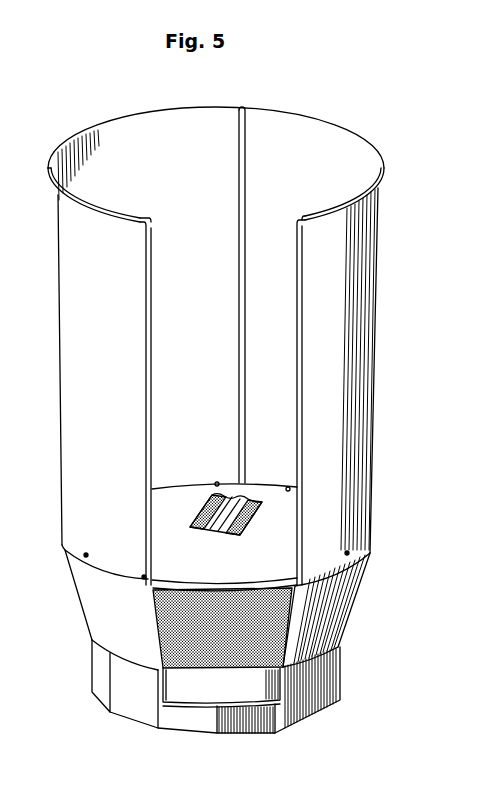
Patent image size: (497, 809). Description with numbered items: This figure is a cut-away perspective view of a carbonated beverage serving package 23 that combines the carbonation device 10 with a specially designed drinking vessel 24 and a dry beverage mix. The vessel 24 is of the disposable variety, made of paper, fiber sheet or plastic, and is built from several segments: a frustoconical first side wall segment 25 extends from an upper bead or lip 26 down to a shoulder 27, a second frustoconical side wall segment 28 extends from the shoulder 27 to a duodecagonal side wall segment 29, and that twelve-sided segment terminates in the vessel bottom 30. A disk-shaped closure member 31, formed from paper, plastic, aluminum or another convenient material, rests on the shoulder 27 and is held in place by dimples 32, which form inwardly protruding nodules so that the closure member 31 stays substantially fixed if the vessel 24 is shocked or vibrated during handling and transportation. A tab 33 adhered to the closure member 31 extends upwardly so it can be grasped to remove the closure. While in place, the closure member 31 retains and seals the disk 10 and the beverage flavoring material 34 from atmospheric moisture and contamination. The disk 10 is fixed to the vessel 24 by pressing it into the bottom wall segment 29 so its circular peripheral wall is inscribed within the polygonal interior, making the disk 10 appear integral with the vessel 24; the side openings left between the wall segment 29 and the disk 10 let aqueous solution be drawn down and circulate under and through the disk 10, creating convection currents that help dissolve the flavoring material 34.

The carbonation device 10 is at (192, 693).
The carbonated beverage serving package 23 is at (383, 325).
The drinking vessel 24 is at (341, 293).
The first side wall segment 25 is at (350, 377).
The upper bead 26 is at (52, 163).
The shoulder 27 is at (70, 568).
The second side wall segment 28 is at (322, 605).
The duodecagonal side wall segment 29 is at (98, 672).
The vessel bottom 30 is at (230, 734).
The closure member 31 is at (201, 561).
The dimples 32 is at (85, 553).
The tab 33 is at (246, 143).
The beverage flavoring material 34 is at (157, 612).